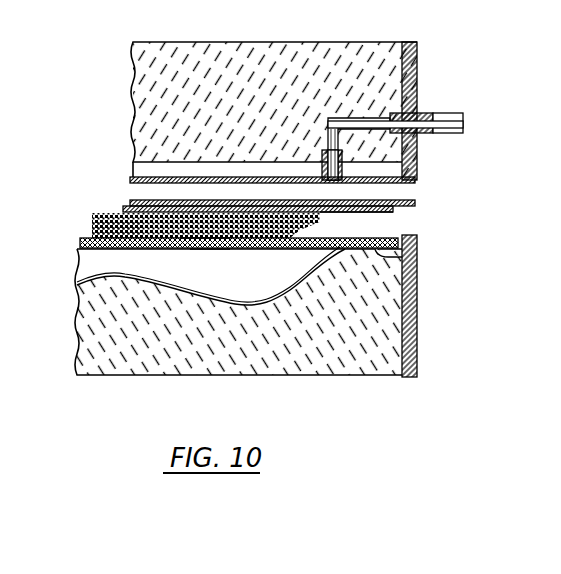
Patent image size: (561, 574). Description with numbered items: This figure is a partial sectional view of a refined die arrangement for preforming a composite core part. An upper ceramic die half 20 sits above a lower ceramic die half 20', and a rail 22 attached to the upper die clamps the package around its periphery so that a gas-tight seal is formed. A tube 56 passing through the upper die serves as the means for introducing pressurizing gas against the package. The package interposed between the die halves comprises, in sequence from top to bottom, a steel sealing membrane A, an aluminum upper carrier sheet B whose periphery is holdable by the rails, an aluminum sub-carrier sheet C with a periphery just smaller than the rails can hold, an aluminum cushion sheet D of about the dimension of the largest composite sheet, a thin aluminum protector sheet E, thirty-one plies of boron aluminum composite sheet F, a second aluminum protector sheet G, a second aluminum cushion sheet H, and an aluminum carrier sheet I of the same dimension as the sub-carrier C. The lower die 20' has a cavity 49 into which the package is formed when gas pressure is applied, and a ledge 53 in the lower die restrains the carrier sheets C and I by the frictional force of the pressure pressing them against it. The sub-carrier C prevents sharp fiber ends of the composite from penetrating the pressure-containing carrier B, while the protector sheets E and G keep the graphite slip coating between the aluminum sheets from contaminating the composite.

The ceramic die half 20 is at (274, 96).
The rail 22 is at (416, 53).
The vacuum tube / fitting 56 is at (465, 121).
The steel sealing membrane A is at (133, 172).
The aluminum upper carrier sheet B is at (405, 200).
The aluminum sub-carrier sheet C is at (129, 205).
The aluminum cushion sheet D is at (322, 216).
The aluminum protector sheet E is at (110, 214).
The boron aluminum composite sheet plies F is at (94, 226).
The aluminum protector sheet G is at (202, 238).
The aluminum cushion sheet H is at (80, 242).
The aluminum carrier sheet I is at (203, 250).
The cavity 49 is at (80, 283).
The channel 53 is at (386, 257).
The ceramic die half 20' is at (246, 321).